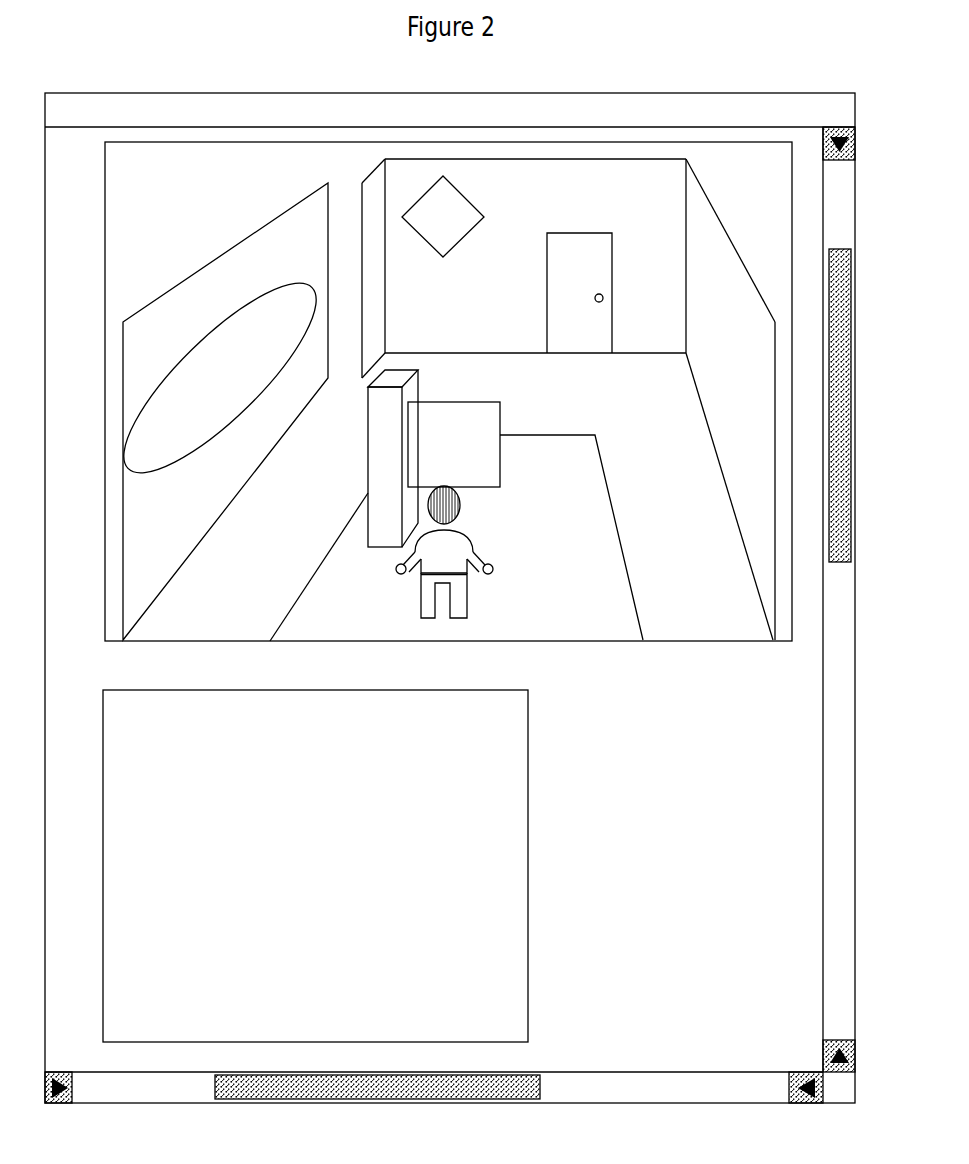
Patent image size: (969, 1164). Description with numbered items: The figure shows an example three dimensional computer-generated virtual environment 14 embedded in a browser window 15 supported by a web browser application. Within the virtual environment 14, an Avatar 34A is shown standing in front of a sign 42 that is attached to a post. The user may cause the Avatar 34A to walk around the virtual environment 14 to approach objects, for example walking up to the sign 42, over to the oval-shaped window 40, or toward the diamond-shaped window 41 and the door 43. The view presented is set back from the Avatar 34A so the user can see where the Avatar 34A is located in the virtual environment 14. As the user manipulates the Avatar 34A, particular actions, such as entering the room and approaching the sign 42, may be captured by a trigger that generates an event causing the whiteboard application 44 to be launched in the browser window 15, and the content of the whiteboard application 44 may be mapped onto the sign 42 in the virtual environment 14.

The browser window 15 is at (566, 88).
The virtual environment 14 is at (167, 166).
The oval-shaped window 40 is at (218, 342).
The diamond-shaped window 41 is at (433, 226).
The sign 42 is at (447, 452).
The door 43 is at (568, 275).
The Avatar 34A is at (482, 590).
The whiteboard application 44 is at (305, 891).